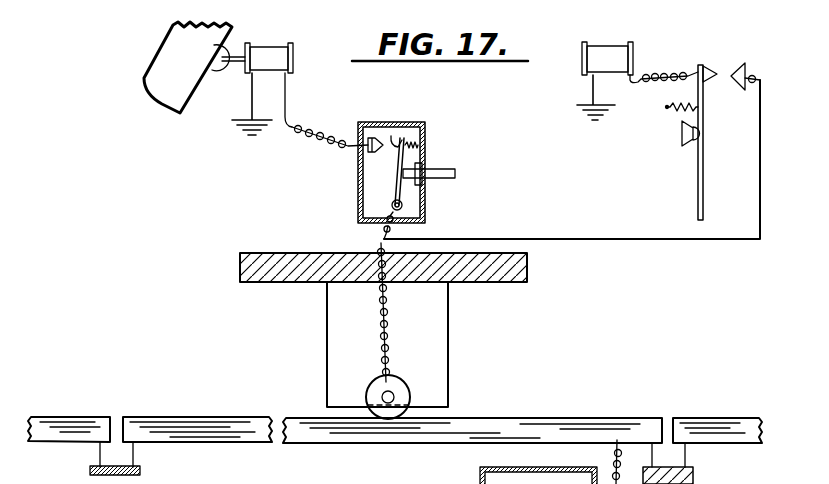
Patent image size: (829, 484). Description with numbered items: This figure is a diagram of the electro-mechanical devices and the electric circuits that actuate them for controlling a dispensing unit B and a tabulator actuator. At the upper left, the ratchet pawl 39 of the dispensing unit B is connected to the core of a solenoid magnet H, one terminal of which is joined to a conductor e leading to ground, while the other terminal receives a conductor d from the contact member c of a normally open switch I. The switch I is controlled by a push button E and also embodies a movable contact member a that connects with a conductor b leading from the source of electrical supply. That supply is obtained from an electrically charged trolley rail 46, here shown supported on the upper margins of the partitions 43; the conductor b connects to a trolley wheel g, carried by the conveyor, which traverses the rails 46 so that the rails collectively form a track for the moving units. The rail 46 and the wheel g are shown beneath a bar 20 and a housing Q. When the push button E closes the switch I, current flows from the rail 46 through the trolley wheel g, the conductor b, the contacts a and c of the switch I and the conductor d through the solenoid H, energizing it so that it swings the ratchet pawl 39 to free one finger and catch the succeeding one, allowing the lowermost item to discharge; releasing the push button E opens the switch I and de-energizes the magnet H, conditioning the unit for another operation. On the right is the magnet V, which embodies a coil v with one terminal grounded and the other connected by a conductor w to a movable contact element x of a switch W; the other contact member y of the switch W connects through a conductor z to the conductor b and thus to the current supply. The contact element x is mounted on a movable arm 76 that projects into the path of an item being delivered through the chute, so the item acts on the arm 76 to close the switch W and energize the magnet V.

The dispensing unit B is at (150, 55).
The ratchet pawl 39 is at (214, 73).
The solenoid magnet H is at (282, 62).
The conductor e is at (250, 107).
The conductor d is at (287, 104).
The switch I is at (428, 124).
The contact member c is at (367, 150).
The movable contact member a is at (391, 136).
The push button E is at (449, 167).
The conductor b is at (379, 238).
The conductor z is at (604, 240).
The bar 20 is at (280, 252).
The housing Q is at (323, 328).
The trolley wheel g is at (401, 385).
The trolley rail 46 is at (228, 417).
The partition 43 is at (88, 470).
The magnet V is at (621, 72).
The coil v is at (607, 50).
The conductor w is at (681, 67).
The movable arm 76 is at (698, 200).
The movable contact element x is at (711, 83).
The contact member y is at (737, 92).
The switch W is at (731, 58).